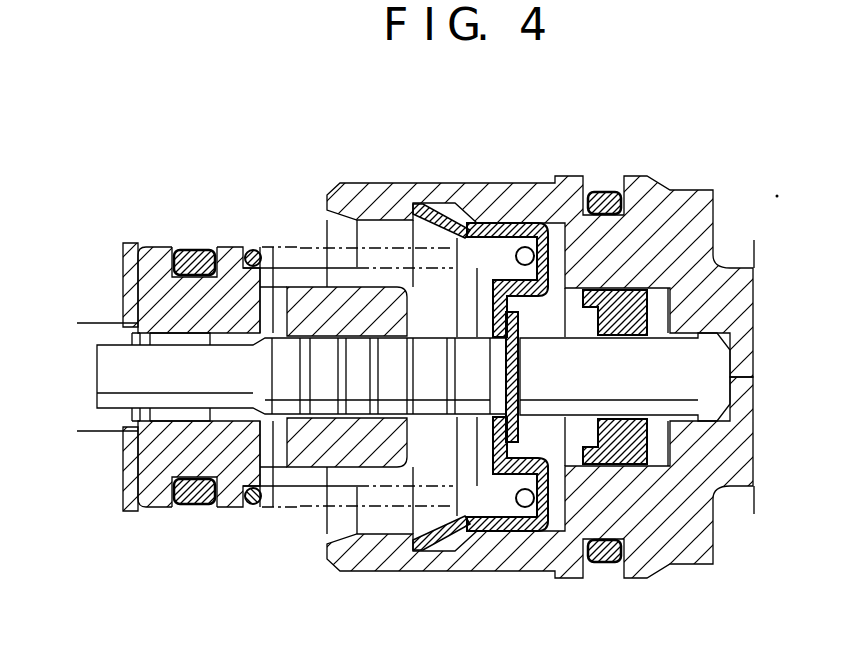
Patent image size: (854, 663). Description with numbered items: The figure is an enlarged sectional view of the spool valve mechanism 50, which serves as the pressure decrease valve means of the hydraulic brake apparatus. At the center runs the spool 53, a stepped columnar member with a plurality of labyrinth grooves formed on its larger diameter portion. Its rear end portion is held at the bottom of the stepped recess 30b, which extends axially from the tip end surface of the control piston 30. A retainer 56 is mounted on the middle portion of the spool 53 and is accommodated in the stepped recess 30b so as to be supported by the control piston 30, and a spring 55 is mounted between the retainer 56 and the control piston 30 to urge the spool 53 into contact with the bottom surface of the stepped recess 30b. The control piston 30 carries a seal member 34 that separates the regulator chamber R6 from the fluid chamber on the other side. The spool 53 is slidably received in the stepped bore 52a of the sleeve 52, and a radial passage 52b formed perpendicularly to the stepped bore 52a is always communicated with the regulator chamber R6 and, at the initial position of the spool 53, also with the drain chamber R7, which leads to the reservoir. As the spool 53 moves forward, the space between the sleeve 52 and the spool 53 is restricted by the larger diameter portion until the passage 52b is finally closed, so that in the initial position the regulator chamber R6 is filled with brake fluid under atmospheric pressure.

The control piston 30 is at (690, 552).
The stepped recess 30b is at (556, 490).
The seal member 34 is at (603, 572).
The spool valve mechanism 50 is at (400, 401).
The sleeve 52 is at (172, 472).
The stepped bore 52a is at (432, 424).
The radial passage 52b is at (270, 310).
The spool 53 is at (117, 360).
The spring 55 is at (312, 240).
The retainer 56 is at (465, 300).
The regulator chamber R6 is at (505, 212).
The drain chamber R7 is at (95, 417).